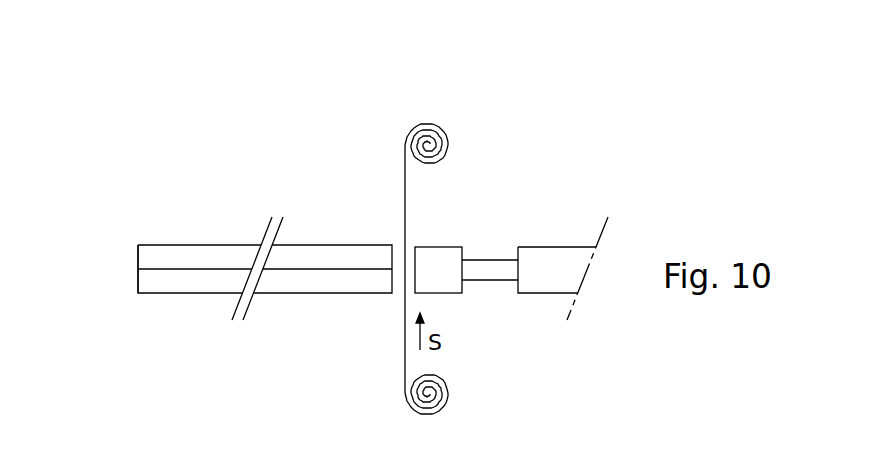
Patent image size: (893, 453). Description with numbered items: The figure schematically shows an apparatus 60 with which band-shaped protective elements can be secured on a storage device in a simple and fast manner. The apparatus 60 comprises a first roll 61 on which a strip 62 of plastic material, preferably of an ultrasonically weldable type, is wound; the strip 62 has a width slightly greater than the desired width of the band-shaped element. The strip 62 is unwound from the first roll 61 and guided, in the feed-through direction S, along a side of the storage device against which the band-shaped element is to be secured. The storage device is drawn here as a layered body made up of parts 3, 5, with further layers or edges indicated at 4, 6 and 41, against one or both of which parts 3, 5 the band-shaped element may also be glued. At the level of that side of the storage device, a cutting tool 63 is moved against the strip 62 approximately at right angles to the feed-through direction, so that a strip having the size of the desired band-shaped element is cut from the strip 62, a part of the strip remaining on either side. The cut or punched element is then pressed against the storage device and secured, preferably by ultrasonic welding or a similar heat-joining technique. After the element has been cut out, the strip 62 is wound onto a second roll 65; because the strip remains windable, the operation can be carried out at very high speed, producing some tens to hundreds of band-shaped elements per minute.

The part of storage device 3 is at (193, 253).
The lower layer 4 is at (138, 282).
The part of storage device 5 is at (193, 283).
The intermediate layer 6 is at (125, 261).
The adhesive layer 41 is at (325, 270).
The apparatus 60 is at (374, 144).
The first roll 61 is at (463, 407).
The strip 62 is at (402, 348).
The cutting tool 63 is at (438, 258).
The second roll 65 is at (466, 128).